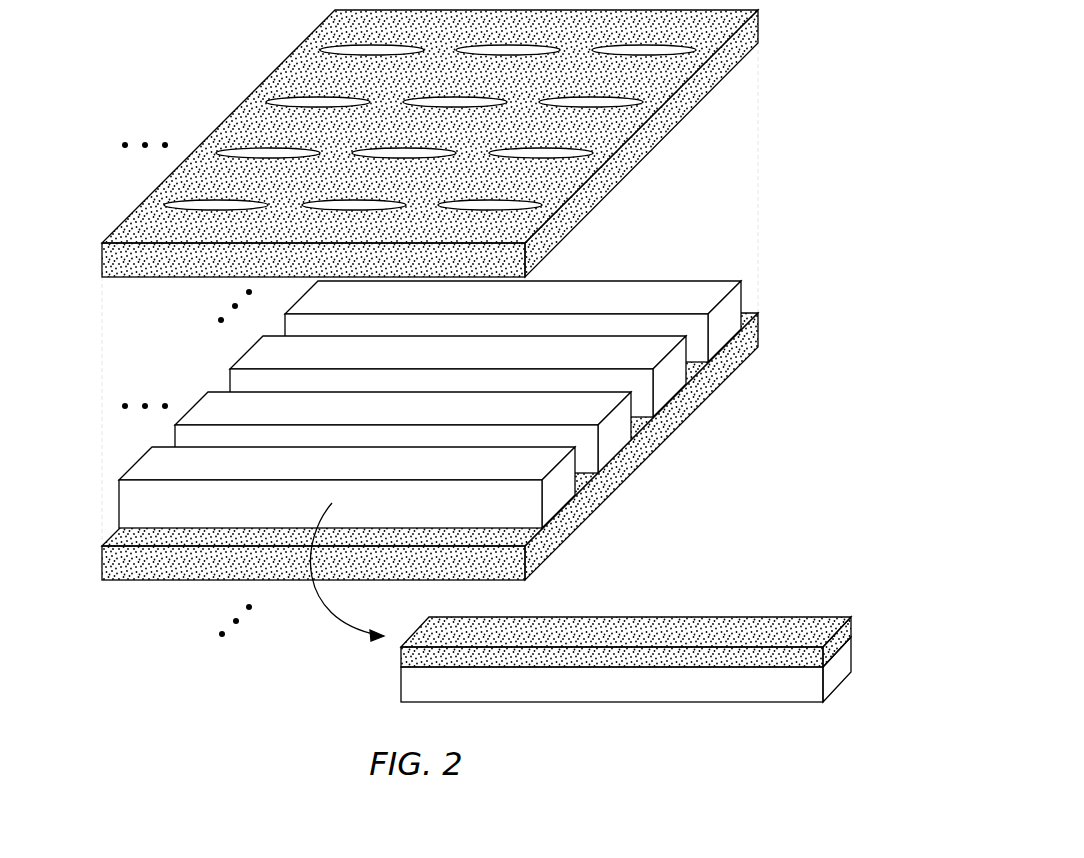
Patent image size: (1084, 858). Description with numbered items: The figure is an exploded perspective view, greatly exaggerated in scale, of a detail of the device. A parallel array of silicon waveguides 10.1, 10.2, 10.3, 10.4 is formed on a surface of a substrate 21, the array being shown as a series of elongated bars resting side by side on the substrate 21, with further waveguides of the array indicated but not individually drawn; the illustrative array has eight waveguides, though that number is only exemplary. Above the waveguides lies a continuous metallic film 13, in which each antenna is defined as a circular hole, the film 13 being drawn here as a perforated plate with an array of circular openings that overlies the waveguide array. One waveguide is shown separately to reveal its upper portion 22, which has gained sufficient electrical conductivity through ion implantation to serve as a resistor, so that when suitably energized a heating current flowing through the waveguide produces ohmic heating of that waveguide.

The continuous metallic film 13 is at (298, 62).
The substrate 21 is at (102, 563).
The silicon waveguide 10.1 is at (723, 322).
The silicon waveguide 10.2 is at (670, 377).
The silicon waveguide 10.3 is at (615, 433).
The silicon waveguide 10.4 is at (558, 488).
The upper portion 22 is at (592, 625).